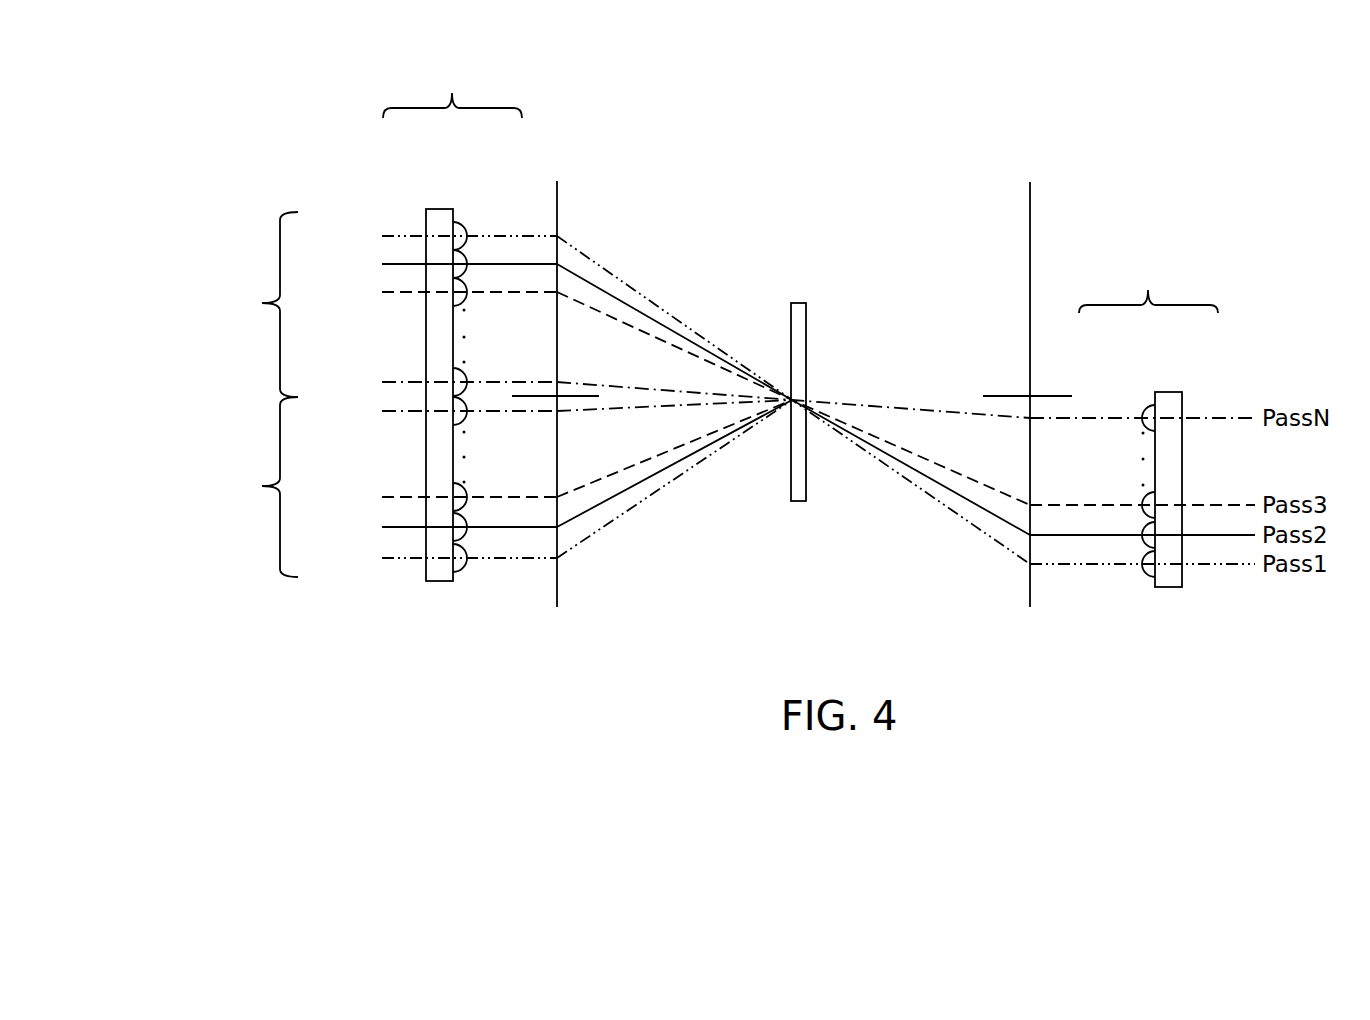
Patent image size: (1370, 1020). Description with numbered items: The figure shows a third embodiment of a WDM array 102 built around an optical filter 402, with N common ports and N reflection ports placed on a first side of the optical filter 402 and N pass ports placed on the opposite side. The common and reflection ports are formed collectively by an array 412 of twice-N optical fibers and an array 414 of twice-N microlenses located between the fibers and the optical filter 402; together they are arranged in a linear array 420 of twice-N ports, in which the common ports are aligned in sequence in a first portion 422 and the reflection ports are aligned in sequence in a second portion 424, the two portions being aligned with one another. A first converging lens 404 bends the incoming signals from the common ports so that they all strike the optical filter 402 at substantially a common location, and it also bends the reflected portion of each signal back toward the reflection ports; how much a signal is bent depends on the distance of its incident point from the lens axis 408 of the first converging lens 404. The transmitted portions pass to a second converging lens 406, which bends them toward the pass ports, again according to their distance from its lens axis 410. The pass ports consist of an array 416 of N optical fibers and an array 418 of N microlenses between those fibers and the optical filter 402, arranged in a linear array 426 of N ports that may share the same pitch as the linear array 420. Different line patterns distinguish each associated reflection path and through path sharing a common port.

The WDM array 102 is at (1139, 55).
The optical filter 402 is at (795, 302).
The first converging lens 404 is at (557, 215).
The second converging lens 406 is at (1030, 226).
The lens axis 408 is at (570, 398).
The lens axis 410 is at (1005, 396).
The array of 2N optical fibers 412 is at (428, 183).
The array of 2N microlenses 414 is at (474, 195).
The array of N optical fibers 416 is at (1178, 373).
The array of N microlenses 418 is at (1137, 388).
The linear array of 2N ports 420 is at (452, 324).
The first portion 422 is at (381, 304).
The second portion 424 is at (381, 487).
The linear array of N ports 426 is at (1148, 423).